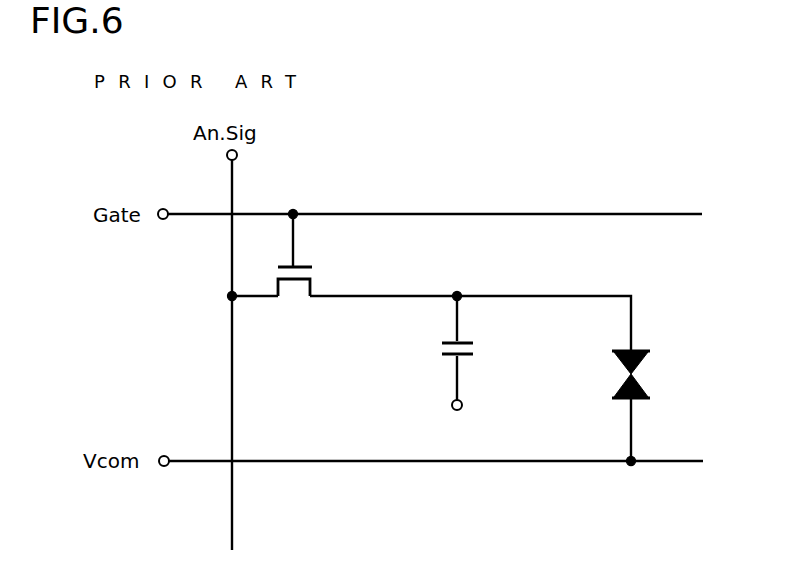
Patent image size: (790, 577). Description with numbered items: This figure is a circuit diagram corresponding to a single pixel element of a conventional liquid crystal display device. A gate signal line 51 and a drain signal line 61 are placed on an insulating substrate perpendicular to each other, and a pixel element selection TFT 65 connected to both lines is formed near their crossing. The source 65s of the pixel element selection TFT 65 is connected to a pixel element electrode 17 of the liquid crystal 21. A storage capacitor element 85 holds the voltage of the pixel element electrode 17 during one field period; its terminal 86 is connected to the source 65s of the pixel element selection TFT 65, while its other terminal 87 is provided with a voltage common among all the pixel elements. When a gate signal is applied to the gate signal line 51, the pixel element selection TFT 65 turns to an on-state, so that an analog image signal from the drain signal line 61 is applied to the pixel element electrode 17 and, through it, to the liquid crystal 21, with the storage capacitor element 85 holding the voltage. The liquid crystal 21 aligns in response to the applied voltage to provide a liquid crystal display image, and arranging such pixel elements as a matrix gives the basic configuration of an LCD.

The drain signal line 61 is at (227, 183).
The gate signal line 51 is at (369, 213).
The pixel element selection TFT 65 is at (296, 300).
The source of the pixel element selection TFT 65s is at (326, 296).
The terminal of the storage capacitor element 86 is at (461, 312).
The storage capacitor element 85 is at (478, 350).
The other terminal of the storage capacitor element 87 is at (463, 407).
The pixel element electrode 17 is at (637, 347).
The liquid crystal 21 is at (641, 373).